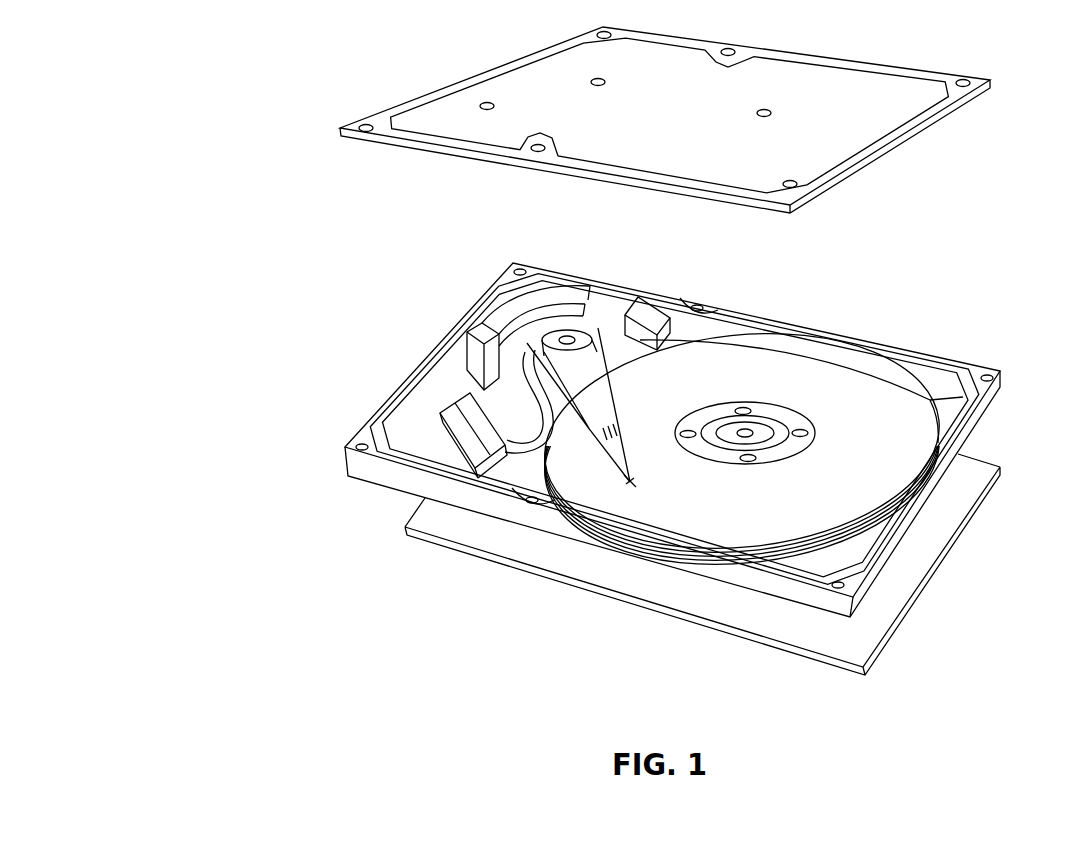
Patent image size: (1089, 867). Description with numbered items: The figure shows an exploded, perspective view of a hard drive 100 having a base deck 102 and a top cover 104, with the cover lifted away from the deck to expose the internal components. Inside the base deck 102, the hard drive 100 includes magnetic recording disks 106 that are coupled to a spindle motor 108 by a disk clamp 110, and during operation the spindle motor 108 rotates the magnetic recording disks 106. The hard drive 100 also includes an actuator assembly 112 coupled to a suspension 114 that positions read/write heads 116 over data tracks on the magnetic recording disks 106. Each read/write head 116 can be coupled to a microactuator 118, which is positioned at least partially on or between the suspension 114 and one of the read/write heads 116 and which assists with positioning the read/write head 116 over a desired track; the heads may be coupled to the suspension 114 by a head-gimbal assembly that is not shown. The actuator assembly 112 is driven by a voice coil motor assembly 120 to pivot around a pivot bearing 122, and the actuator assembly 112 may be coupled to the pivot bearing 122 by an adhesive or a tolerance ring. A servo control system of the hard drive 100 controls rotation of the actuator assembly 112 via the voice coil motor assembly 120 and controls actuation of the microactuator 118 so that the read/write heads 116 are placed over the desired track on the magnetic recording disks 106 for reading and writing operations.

The hard drive 100 is at (258, 74).
The base deck 102 is at (982, 410).
The top cover 104 is at (841, 107).
The magnetic recording disks 106 is at (891, 457).
The spindle motor 108 is at (757, 428).
The disk clamp 110 is at (787, 447).
The actuator assembly 112 is at (604, 390).
The suspension 114 is at (593, 417).
The read/write heads 116 is at (633, 481).
The microactuator 118 is at (656, 430).
The voice coil motor assembly 120 is at (505, 300).
The pivot bearing 122 is at (575, 334).